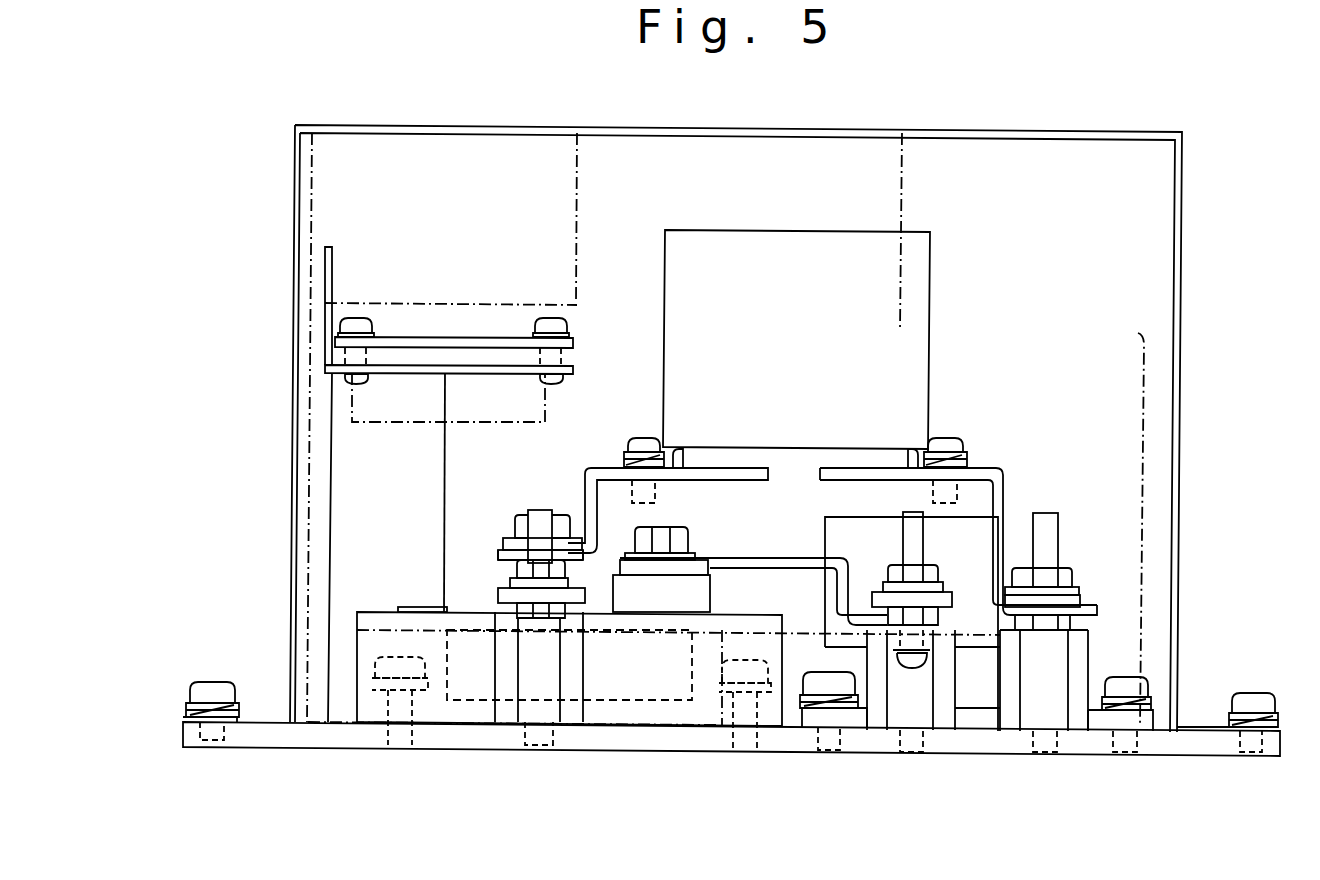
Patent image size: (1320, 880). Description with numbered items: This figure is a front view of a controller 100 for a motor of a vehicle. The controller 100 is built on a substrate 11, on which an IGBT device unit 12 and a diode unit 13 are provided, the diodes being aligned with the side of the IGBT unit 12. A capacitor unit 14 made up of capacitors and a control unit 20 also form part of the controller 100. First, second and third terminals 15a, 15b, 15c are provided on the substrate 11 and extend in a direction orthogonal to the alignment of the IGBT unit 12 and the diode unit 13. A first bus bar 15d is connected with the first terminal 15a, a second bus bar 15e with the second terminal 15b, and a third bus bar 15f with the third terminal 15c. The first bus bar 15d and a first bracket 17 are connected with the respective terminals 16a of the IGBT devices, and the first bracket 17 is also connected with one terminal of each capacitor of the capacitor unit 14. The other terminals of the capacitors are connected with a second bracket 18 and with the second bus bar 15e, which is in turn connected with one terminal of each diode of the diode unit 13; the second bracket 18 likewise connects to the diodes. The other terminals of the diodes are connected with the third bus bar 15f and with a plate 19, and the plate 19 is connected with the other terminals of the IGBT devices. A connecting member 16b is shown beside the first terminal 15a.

The controller 100 is at (266, 171).
The control unit 20 is at (440, 178).
The capacitor unit 14 is at (918, 272).
The substrate 11 is at (258, 748).
The IGBT device unit 12 is at (440, 708).
The diode unit 13 is at (978, 715).
The first terminal 15a is at (550, 710).
The second terminal 15b is at (917, 690).
The third terminal 15c is at (1045, 695).
The first bus bar 15d is at (505, 595).
The second bus bar 15e is at (948, 597).
The third bus bar 15f is at (1078, 600).
The terminal of IGBT device 16a is at (505, 582).
The connecting member / bus bar 16b is at (620, 598).
The first bracket 17 is at (735, 475).
The second bracket 18 is at (830, 473).
The plate 19 is at (800, 568).